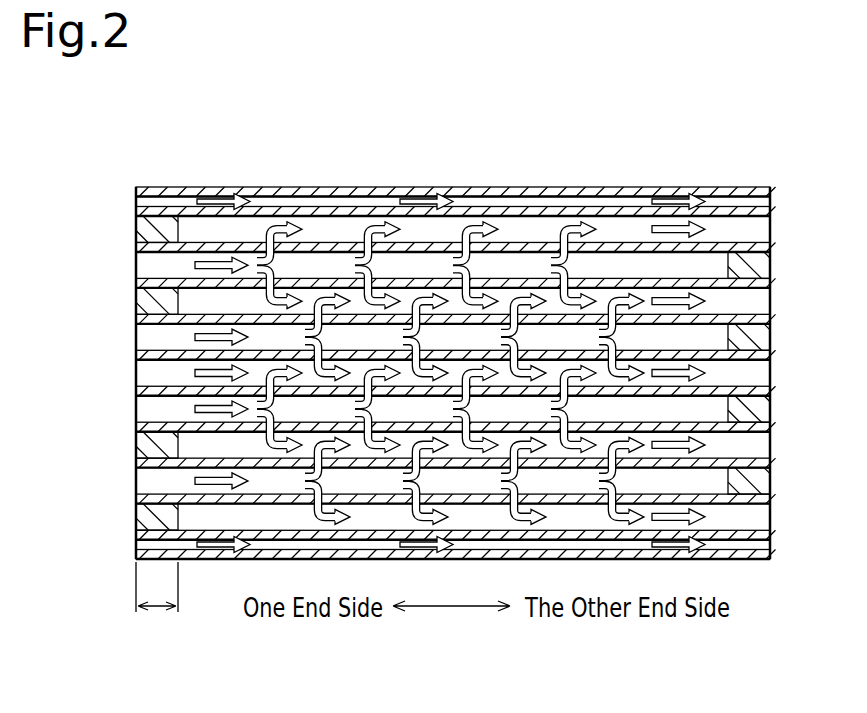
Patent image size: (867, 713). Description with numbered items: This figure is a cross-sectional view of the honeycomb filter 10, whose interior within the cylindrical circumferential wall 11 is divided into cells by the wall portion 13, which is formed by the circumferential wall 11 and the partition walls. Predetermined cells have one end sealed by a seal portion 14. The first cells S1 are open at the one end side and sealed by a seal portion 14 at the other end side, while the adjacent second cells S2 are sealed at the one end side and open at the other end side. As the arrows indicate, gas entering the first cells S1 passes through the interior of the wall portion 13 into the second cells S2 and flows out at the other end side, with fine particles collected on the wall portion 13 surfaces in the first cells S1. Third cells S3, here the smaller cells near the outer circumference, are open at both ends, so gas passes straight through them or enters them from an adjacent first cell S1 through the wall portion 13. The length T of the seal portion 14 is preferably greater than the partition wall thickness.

The honeycomb filter 10 is at (580, 158).
The circumferential wall 11 is at (641, 187).
The wall portion 13 is at (345, 207).
The seal portion 14 is at (136, 237).
The first cells S1 is at (136, 266).
The second cells S2 is at (770, 229).
The third cells S3 is at (136, 199).
The length of the seal portion T is at (157, 603).